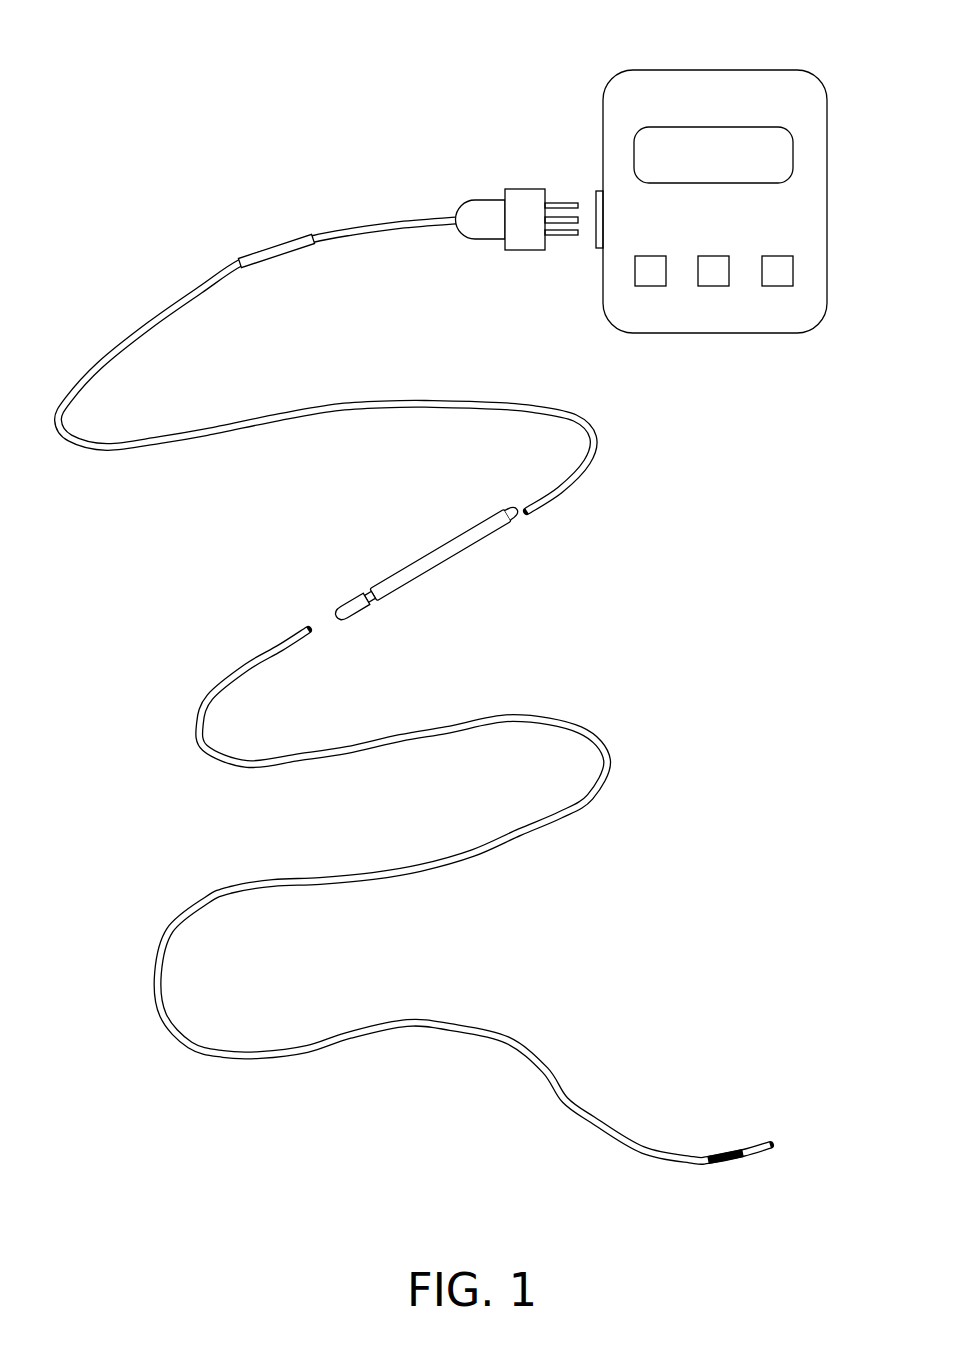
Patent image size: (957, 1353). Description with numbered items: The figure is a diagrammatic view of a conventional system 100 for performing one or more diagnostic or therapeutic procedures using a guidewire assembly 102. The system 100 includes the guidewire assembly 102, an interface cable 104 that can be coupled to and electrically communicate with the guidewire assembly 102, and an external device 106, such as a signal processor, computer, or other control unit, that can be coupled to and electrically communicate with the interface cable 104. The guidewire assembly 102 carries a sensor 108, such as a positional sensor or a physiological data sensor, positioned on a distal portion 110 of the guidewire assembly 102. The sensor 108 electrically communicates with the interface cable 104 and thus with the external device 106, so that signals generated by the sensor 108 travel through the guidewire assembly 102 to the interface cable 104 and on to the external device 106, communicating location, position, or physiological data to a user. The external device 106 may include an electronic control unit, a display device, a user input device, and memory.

The system 100 is at (660, 553).
The guidewire assembly 102 is at (650, 752).
The interface cable 104 is at (632, 432).
The external device 106 is at (713, 70).
The sensor 108 is at (727, 1153).
The distal portion 110 is at (783, 1138).